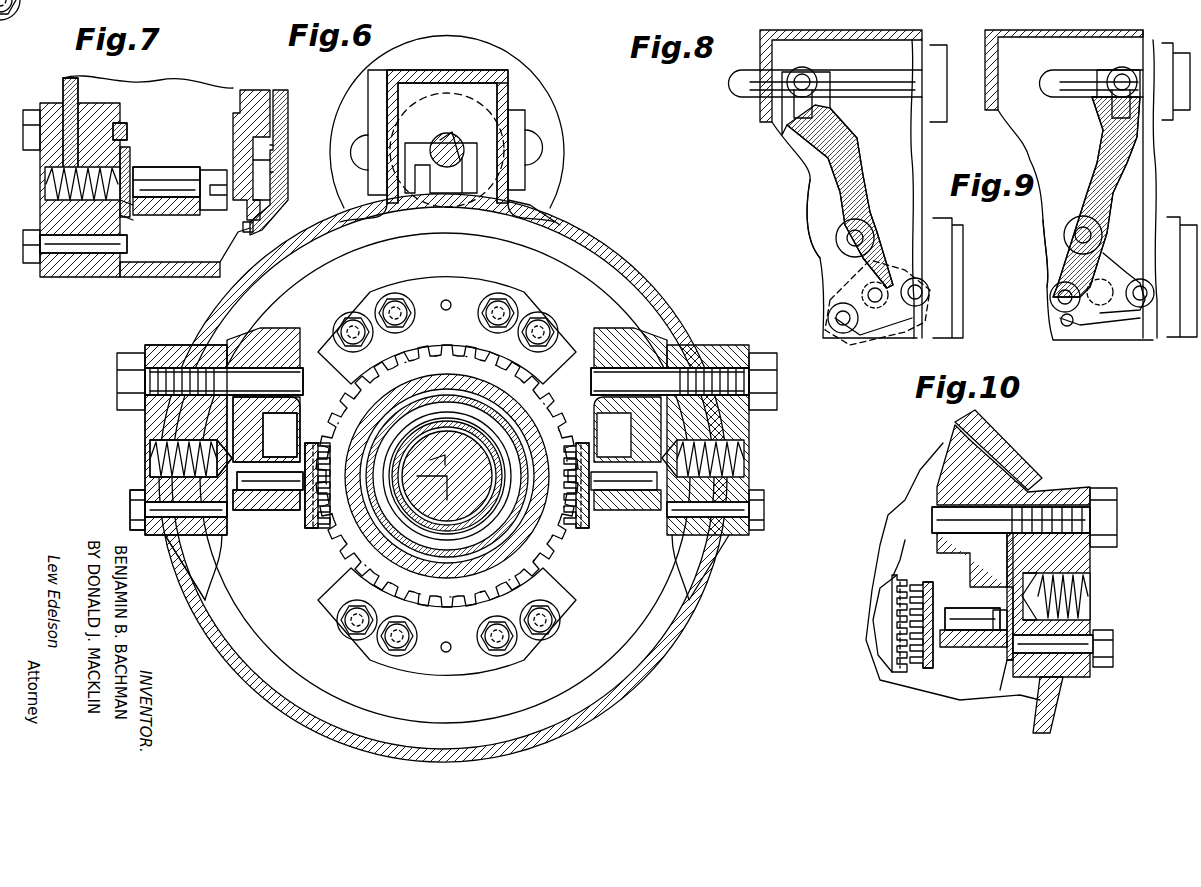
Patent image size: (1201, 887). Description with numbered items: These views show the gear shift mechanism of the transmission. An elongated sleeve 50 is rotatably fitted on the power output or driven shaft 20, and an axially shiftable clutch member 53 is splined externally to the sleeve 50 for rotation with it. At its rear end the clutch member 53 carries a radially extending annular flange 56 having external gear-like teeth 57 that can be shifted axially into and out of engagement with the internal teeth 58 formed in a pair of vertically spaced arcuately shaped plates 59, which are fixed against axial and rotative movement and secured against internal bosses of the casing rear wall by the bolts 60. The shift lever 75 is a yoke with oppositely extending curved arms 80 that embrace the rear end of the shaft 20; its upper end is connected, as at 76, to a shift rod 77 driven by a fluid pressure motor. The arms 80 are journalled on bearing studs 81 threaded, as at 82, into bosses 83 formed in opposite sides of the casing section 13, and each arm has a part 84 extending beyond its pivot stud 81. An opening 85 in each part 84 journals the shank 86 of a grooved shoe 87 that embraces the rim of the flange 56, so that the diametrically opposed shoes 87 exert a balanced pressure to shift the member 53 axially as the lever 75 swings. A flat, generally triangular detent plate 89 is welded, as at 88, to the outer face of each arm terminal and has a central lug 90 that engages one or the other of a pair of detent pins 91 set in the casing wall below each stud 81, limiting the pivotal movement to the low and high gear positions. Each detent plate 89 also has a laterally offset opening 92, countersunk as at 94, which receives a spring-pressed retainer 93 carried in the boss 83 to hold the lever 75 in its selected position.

In FIG. 6, the section of the transmission casing 13 is at (600, 250).
In FIG. 8, the section of the transmission casing 13 is at (861, 184).
In FIG. 9, the section of the transmission casing 13 is at (1091, 185).
In FIG. 10, the section of the transmission casing 13 is at (990, 428).
In FIG. 6, the power output or driven shaft 20 is at (410, 430).
In FIG. 6, the elongated sleeve 50 is at (443, 530).
In FIG. 6, the axially shiftable clutch member 53 is at (380, 550).
In FIG. 7, the axially shiftable clutch member 53 is at (262, 100).
In FIG. 6, the annular flange 56 is at (560, 540).
In FIG. 7, the annular flange 56 is at (248, 228).
In FIG. 10, the annular flange 56 is at (888, 562).
In FIG. 6, the external gear-like teeth 57 is at (553, 428).
In FIG. 10, the external gear-like teeth 57 is at (905, 540).
In FIG. 6, the internal teeth 58 is at (540, 365).
In FIG. 6, the arcuately shaped plates 59 is at (444, 478).
In FIG. 6, the bolts 60 is at (395, 313).
In FIG. 6, the shift lever 75 is at (480, 206).
In FIG. 8, the shift lever 75 is at (820, 140).
In FIG. 9, the shift lever 75 is at (1100, 128).
In FIG. 6, the upper end connection 76 is at (400, 150).
In FIG. 8, the upper end connection 76 is at (805, 76).
In FIG. 9, the upper end connection 76 is at (1120, 74).
In FIG. 6, the shift rod 77 is at (452, 140).
In FIG. 8, the shift rod 77 is at (750, 92).
In FIG. 9, the shift rod 77 is at (1068, 84).
In FIG. 6, the curved arms 80 is at (593, 300).
In FIG. 8, the curved arms 80 is at (838, 202).
In FIG. 9, the curved arms 80 is at (1130, 180).
In FIG. 10, the curved arms 80 is at (955, 458).
In FIG. 6, the bearing studs 81 is at (205, 380).
In FIG. 8, the bearing studs 81 is at (850, 240).
In FIG. 9, the bearing studs 81 is at (1078, 237).
In FIG. 10, the bearing studs 81 is at (1052, 515).
In FIG. 6, the threaded portion 82 is at (158, 413).
In FIG. 7, the threaded portion 82 is at (80, 190).
In FIG. 10, the threaded portion 82 is at (1092, 560).
In FIG. 6, the bosses 83 is at (185, 372).
In FIG. 7, the bosses 83 is at (88, 143).
In FIG. 10, the bosses 83 is at (1040, 495).
In FIG. 6, the extending part 84 is at (257, 503).
In FIG. 7, the extending part 84 is at (188, 215).
In FIG. 10, the extending part 84 is at (965, 647).
In FIG. 6, the opening 85 is at (270, 455).
In FIG. 10, the opening 85 is at (1000, 632).
In FIG. 6, the shank 86 is at (288, 500).
In FIG. 7, the shank 86 is at (190, 167).
In FIG. 8, the shank 86 is at (862, 296).
In FIG. 9, the shank 86 is at (1058, 297).
In FIG. 10, the shank 86 is at (958, 608).
In FIG. 6, the grooved shoe 87 is at (305, 528).
In FIG. 7, the grooved shoe 87 is at (208, 170).
In FIG. 10, the grooved shoe 87 is at (918, 668).
In FIG. 7, the welding 88 is at (135, 165).
In FIG. 6, the detent plate 89 is at (217, 430).
In FIG. 7, the detent plate 89 is at (130, 230).
In FIG. 8, the detent plate 89 is at (897, 258).
In FIG. 9, the detent plate 89 is at (1120, 262).
In FIG. 10, the detent plate 89 is at (1005, 563).
In FIG. 6, the central lug 90 is at (205, 545).
In FIG. 8, the central lug 90 is at (870, 308).
In FIG. 9, the central lug 90 is at (1082, 312).
In FIG. 10, the central lug 90 is at (1010, 662).
In FIG. 6, the detent pins 91 is at (177, 507).
In FIG. 7, the detent pins 91 is at (118, 123).
In FIG. 8, the detent pins 91 is at (845, 325).
In FIG. 9, the detent pins 91 is at (1060, 322).
In FIG. 10, the detent pins 91 is at (1070, 650).
In FIG. 6, the opening 92 is at (243, 447).
In FIG. 7, the opening 92 is at (137, 172).
In FIG. 6, the spring-pressed retainer 93 is at (145, 478).
In FIG. 7, the spring-pressed retainer 93 is at (55, 184).
In FIG. 10, the spring-pressed retainer 93 is at (1090, 598).
In FIG. 6, the countersink 94 is at (145, 498).